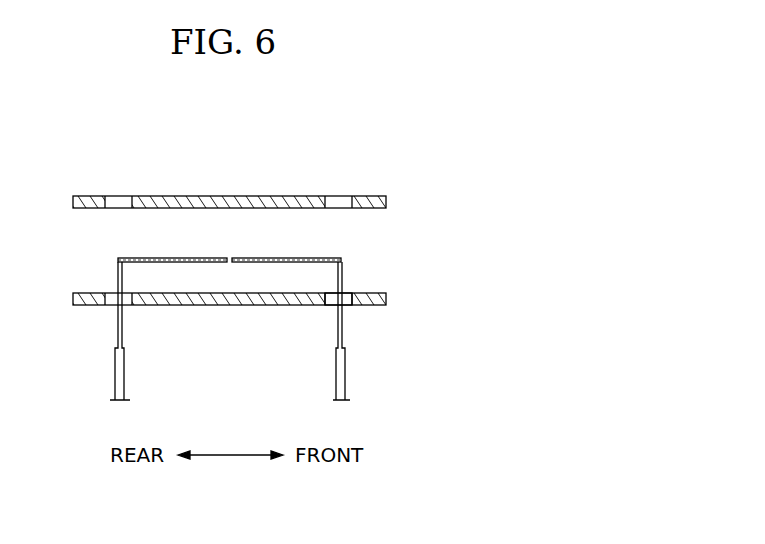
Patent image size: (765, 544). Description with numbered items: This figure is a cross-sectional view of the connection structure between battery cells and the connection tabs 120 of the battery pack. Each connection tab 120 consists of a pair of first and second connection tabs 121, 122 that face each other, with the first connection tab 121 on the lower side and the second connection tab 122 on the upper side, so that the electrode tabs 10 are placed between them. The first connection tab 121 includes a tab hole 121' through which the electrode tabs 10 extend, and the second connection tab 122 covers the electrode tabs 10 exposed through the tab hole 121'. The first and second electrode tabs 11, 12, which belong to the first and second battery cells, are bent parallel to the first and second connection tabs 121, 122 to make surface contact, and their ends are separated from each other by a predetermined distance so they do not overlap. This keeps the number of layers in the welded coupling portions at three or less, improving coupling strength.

The electrode tab 10 is at (229, 185).
The first electrode tab 11 is at (199, 257).
The second electrode tab 12 is at (255, 257).
The connection tab 120 is at (302, 251).
The first connection tab 121 is at (273, 299).
The tab hole 121' is at (319, 330).
The second connection tab 122 is at (386, 203).